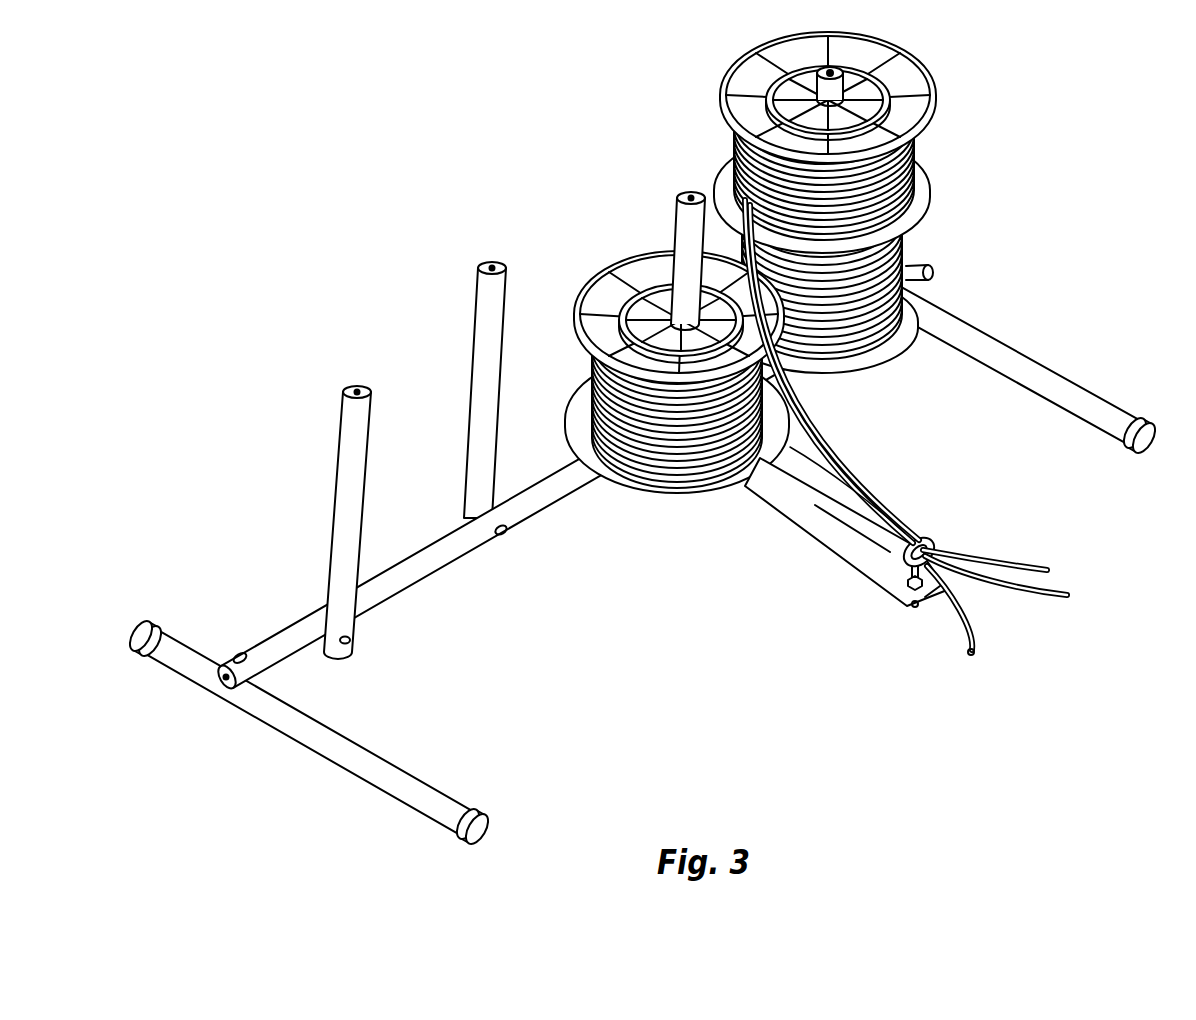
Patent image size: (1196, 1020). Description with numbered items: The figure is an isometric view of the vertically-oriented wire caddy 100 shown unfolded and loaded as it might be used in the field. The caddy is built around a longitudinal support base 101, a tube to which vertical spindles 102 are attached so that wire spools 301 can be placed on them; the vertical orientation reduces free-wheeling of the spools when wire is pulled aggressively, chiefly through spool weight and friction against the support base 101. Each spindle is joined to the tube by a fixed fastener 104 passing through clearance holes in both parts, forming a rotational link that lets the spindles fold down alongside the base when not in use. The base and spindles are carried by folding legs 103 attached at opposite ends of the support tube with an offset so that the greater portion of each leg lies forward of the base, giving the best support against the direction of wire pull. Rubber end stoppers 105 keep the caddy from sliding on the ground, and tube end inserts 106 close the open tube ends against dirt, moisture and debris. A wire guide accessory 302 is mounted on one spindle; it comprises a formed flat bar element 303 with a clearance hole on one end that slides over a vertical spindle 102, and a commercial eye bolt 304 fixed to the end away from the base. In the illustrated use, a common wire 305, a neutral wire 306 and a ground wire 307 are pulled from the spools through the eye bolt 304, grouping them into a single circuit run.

The wire caddy 100 is at (660, 440).
The longitudinal support base 101 is at (415, 594).
The vertical spindles 102 is at (476, 312).
The folding legs 103 is at (398, 765).
The fixed fastener 104 is at (502, 538).
The rubber end stoppers 105 is at (1160, 426).
The tube end inserts 106 is at (358, 383).
The wire spools 301 is at (938, 118).
The wire guide accessory 302 is at (845, 558).
The formed flat bar element 303 is at (766, 512).
The eye bolt 304 is at (921, 537).
The common wire 305 is at (1012, 570).
The neutral wire 306 is at (1043, 600).
The ground wire 307 is at (962, 623).